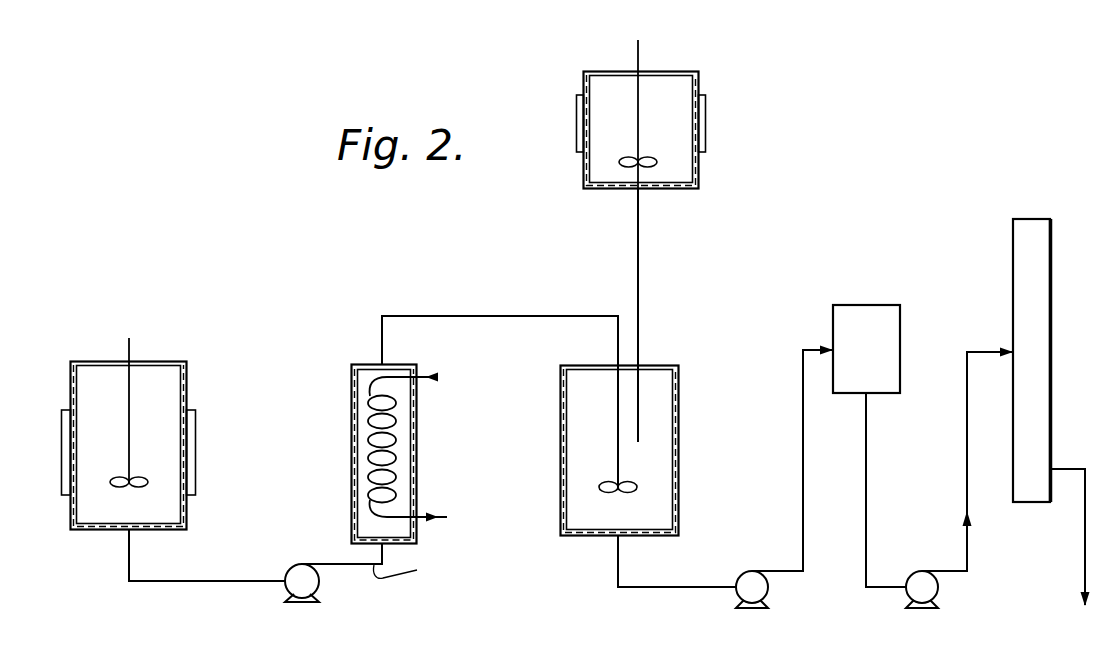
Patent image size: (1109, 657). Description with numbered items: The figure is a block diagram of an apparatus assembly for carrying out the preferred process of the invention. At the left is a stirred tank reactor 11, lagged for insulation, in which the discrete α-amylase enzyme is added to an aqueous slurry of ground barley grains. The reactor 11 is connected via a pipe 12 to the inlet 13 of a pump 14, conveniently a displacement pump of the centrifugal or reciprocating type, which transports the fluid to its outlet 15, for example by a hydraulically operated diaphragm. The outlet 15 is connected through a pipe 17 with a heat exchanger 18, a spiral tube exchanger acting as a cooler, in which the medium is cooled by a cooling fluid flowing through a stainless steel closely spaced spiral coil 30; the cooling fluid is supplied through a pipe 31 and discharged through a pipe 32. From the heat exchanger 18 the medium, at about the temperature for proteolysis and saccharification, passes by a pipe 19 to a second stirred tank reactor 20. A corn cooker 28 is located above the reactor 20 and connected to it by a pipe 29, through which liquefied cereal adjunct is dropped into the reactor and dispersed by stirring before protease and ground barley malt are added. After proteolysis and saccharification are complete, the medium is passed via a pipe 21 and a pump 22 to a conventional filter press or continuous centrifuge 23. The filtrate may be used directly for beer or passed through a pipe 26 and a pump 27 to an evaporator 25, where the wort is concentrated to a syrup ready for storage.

The stirred tank reactor 11 is at (93, 527).
The pipe 12 is at (198, 566).
The inlet 13 is at (288, 578).
The pump 14 is at (317, 598).
The outlet 15 is at (323, 546).
The pipe 17 is at (413, 568).
The heat exchanger 18 is at (416, 473).
The pipe 19 is at (473, 316).
The stirred tank reactor 20 is at (562, 463).
The pipe 21 is at (693, 586).
The pump 22 is at (770, 605).
The filter press 23 is at (885, 305).
The evaporator 25 is at (1038, 502).
The pipe 26 is at (883, 584).
The pump 27 is at (937, 607).
The corn cooker 28 is at (678, 130).
The pipe 29 is at (640, 316).
The spiral coil 30 is at (370, 443).
The pipe 31 is at (440, 377).
The pipe 32 is at (440, 517).